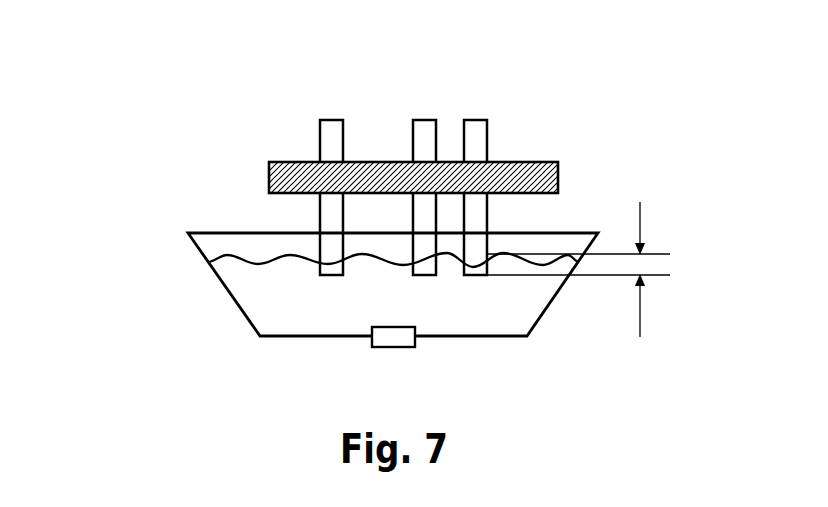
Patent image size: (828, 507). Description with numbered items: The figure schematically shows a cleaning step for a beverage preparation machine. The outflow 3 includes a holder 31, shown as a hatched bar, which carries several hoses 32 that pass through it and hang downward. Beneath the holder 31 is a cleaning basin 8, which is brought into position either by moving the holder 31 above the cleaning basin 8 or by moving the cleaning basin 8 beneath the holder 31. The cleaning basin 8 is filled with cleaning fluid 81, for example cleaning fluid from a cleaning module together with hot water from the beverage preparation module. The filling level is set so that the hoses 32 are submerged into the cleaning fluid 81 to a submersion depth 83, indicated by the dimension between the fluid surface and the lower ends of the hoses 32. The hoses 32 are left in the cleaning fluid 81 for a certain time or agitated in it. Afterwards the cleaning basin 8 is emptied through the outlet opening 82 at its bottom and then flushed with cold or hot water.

The outflow 3 is at (260, 140).
The holder 31 is at (528, 172).
The hoses 32 is at (477, 130).
The cleaning basin 8 is at (188, 316).
The cleaning fluid 81 is at (250, 275).
The outlet opening 82 is at (383, 337).
The submersion depth 83 is at (590, 269).